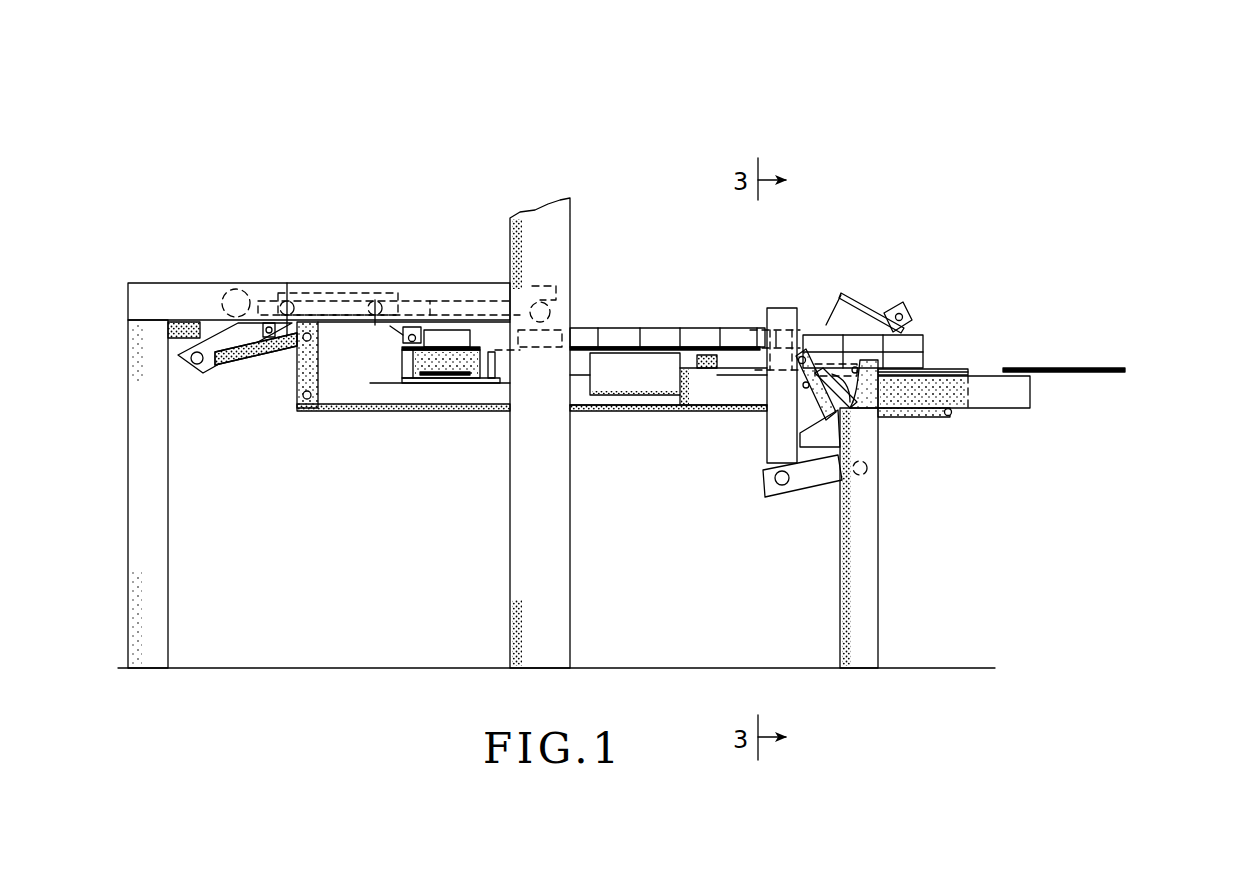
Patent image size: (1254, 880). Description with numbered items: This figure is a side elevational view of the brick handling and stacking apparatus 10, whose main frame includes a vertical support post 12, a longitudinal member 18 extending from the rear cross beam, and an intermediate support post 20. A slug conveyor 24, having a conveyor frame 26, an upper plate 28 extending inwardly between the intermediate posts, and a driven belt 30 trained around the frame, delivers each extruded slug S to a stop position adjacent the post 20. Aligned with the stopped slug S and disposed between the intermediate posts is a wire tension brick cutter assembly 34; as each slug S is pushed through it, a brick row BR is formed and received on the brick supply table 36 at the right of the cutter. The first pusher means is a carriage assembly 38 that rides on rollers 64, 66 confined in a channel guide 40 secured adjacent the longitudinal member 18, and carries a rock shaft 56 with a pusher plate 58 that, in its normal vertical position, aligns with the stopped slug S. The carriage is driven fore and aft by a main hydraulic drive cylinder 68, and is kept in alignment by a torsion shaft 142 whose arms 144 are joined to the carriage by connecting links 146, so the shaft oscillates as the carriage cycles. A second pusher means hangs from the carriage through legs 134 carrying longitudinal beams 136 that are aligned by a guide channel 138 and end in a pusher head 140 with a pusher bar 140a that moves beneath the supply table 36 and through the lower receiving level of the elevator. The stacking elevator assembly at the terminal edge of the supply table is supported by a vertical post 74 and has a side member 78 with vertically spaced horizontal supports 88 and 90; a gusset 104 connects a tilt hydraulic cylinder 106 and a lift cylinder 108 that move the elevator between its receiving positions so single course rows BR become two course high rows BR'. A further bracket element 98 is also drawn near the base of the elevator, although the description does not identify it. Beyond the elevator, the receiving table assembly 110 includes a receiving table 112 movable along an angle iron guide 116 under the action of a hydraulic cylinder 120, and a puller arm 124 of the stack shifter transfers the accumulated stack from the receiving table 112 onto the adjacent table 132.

The brick stacking apparatus 10 is at (833, 62).
The vertical support post 12 is at (113, 494).
The longitudinal member 18 is at (319, 249).
The intermediate support post 20 is at (573, 433).
The slug conveyor 24 is at (397, 393).
The conveyor frame 26 is at (449, 421).
The upper plate 28 is at (491, 422).
The driven belt 30 is at (442, 404).
The brick cutter assembly 34 is at (592, 270).
The brick supply table 36 is at (749, 393).
The carriage assembly 38 is at (369, 226).
The channel guide 40 is at (528, 270).
The rock shaft 56 is at (353, 265).
The pusher plate 58 is at (447, 248).
The roller 64 is at (389, 259).
The roller 66 is at (399, 274).
The main hydraulic drive cylinder 68 is at (164, 275).
The vertical post 74 is at (893, 538).
The side member 78 is at (793, 503).
The horizontal support 88 is at (770, 288).
The horizontal support 90 is at (761, 386).
The gusset 98 is at (814, 482).
The gusset 104 is at (827, 330).
The tilt hydraulic cylinder 106 is at (883, 408).
The lift cylinder 108 is at (898, 422).
The receiving table assembly 110 is at (1061, 312).
The receiving table 112 is at (954, 354).
The angle iron guide 116 is at (1004, 347).
The hydraulic cylinder 120 is at (999, 436).
The puller arm 124 is at (889, 273).
The receiving table 132 is at (1114, 329).
The leg 134 is at (302, 388).
The longitudinal beam 136 is at (403, 434).
The guide channel 138 is at (414, 425).
The pusher head 140 is at (668, 413).
The pusher bar 140a is at (674, 429).
The torsion shaft 142 is at (266, 265).
The arm 144 is at (234, 381).
The connecting link 146 is at (256, 403).
The slug S is at (490, 250).
The brick row BR is at (667, 300).
The two course high brick row BR' is at (891, 314).